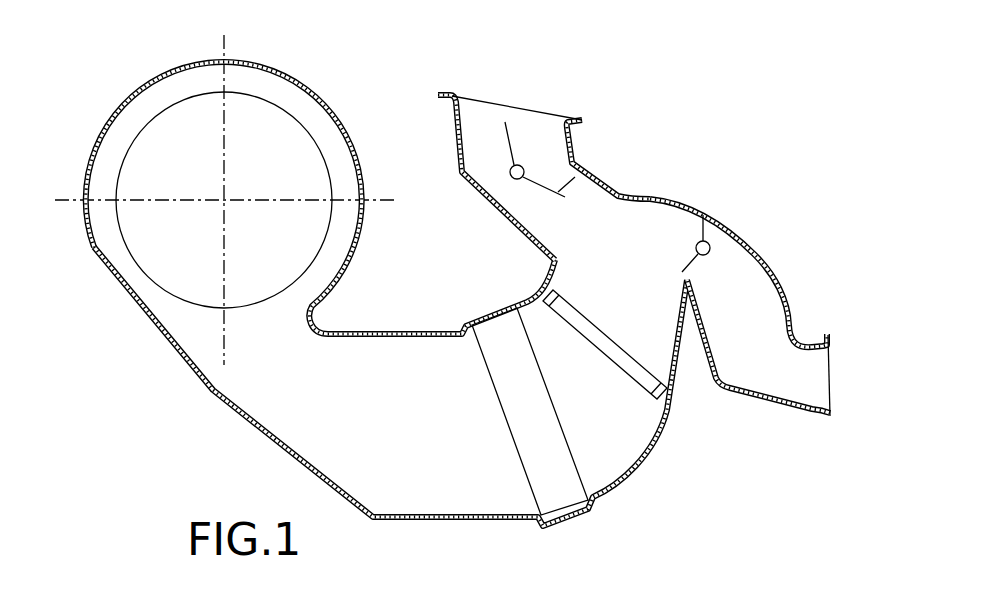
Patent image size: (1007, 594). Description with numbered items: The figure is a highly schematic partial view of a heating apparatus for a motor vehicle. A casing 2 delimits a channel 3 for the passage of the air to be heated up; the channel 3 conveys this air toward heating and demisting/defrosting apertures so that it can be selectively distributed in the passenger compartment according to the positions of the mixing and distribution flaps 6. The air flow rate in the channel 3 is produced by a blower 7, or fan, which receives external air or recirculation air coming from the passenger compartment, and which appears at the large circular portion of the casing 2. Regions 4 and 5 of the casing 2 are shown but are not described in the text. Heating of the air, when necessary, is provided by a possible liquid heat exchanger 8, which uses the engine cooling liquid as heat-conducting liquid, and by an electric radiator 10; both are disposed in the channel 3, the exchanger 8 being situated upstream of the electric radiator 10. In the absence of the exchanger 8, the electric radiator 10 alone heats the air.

The casing 2 is at (217, 400).
The channel 3 is at (356, 421).
The inlet 4 is at (535, 112).
The outlet 5 is at (832, 358).
The mixing and distribution flaps 6 is at (700, 222).
The blower 7 is at (157, 165).
The liquid heat exchanger 8 is at (513, 427).
The electric radiator 10 is at (612, 360).